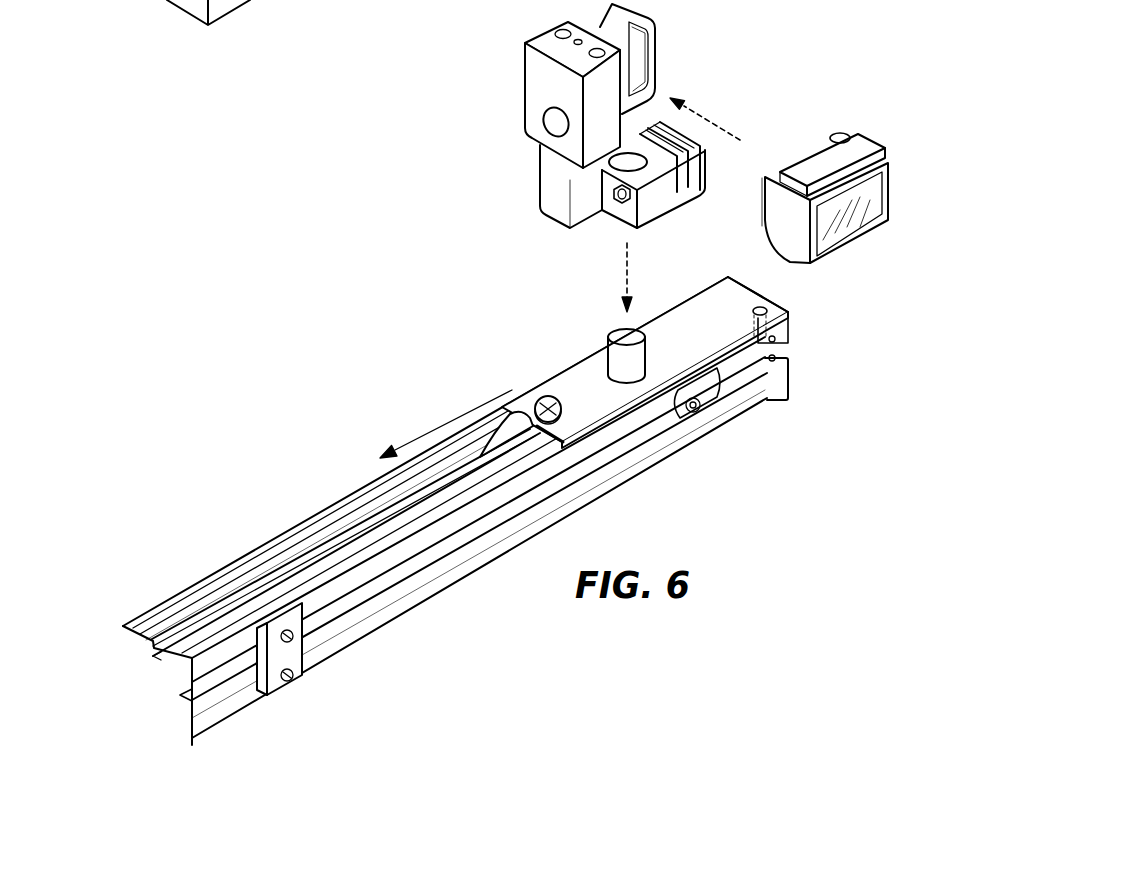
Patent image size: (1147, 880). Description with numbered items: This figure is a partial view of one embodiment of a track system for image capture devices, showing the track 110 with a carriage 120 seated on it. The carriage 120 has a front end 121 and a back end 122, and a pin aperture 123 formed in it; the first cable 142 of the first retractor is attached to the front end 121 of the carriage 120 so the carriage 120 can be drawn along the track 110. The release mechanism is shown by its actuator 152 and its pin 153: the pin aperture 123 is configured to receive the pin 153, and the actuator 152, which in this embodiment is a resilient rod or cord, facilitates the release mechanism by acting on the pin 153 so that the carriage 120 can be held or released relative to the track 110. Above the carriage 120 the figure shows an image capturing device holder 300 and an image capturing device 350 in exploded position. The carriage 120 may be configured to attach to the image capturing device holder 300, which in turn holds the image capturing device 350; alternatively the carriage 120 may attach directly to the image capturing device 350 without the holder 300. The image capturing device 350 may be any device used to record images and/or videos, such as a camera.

The track 110 is at (158, 613).
The carriage 120 is at (592, 368).
The front end 121 is at (527, 405).
The back end 122 is at (732, 287).
The pin aperture 123 is at (764, 313).
The first cable 142 is at (380, 508).
The actuator 152 is at (530, 497).
The pin 153 is at (757, 313).
The image capturing device holder 300 is at (540, 88).
The image capturing device 350 is at (815, 157).